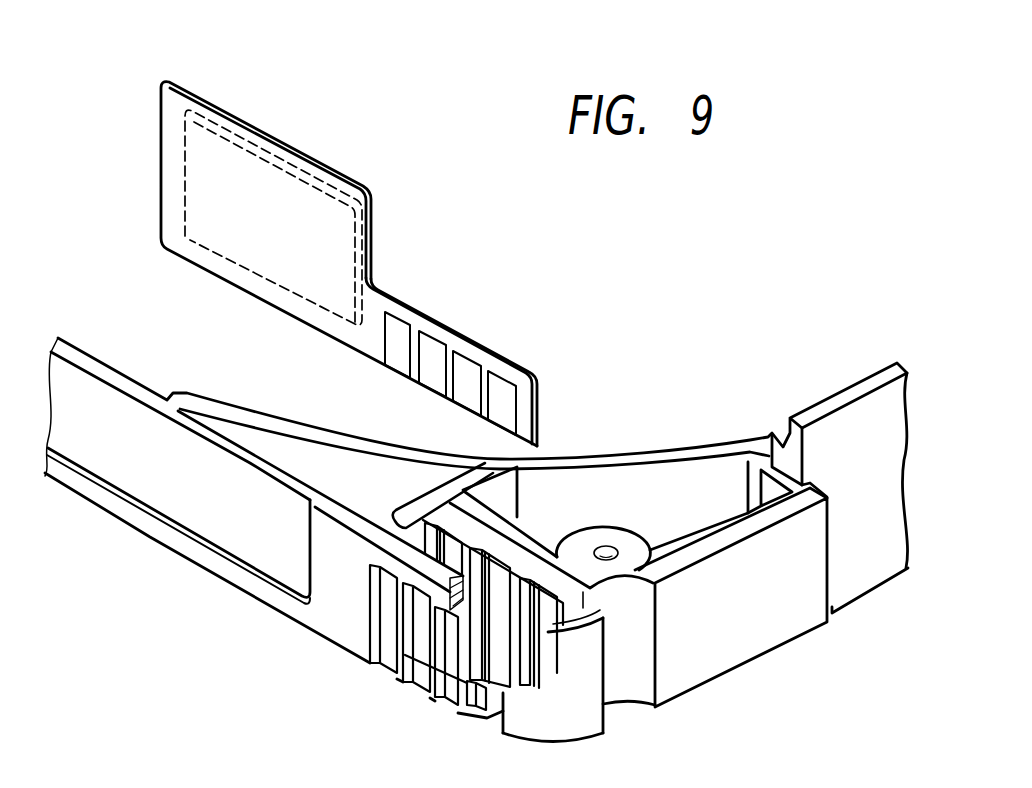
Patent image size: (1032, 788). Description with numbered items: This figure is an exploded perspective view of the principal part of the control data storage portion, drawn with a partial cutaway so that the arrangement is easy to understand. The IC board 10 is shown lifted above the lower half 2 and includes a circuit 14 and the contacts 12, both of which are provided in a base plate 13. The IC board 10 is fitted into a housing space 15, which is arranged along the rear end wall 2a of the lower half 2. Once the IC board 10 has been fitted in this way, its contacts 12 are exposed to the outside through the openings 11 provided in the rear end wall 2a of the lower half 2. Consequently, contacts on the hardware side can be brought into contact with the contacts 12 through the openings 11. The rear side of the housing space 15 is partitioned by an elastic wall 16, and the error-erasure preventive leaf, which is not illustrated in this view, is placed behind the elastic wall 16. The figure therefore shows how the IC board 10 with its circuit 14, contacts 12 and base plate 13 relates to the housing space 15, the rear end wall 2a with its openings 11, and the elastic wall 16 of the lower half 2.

The lower half 2 is at (753, 660).
The rear end wall 2a is at (327, 623).
The IC board 10 is at (372, 183).
The openings 11 is at (390, 628).
The contacts 12 is at (493, 414).
The base plate 13 is at (382, 288).
The circuit 14 is at (303, 164).
The housing space 15 is at (390, 517).
The elastic wall 16 is at (524, 677).